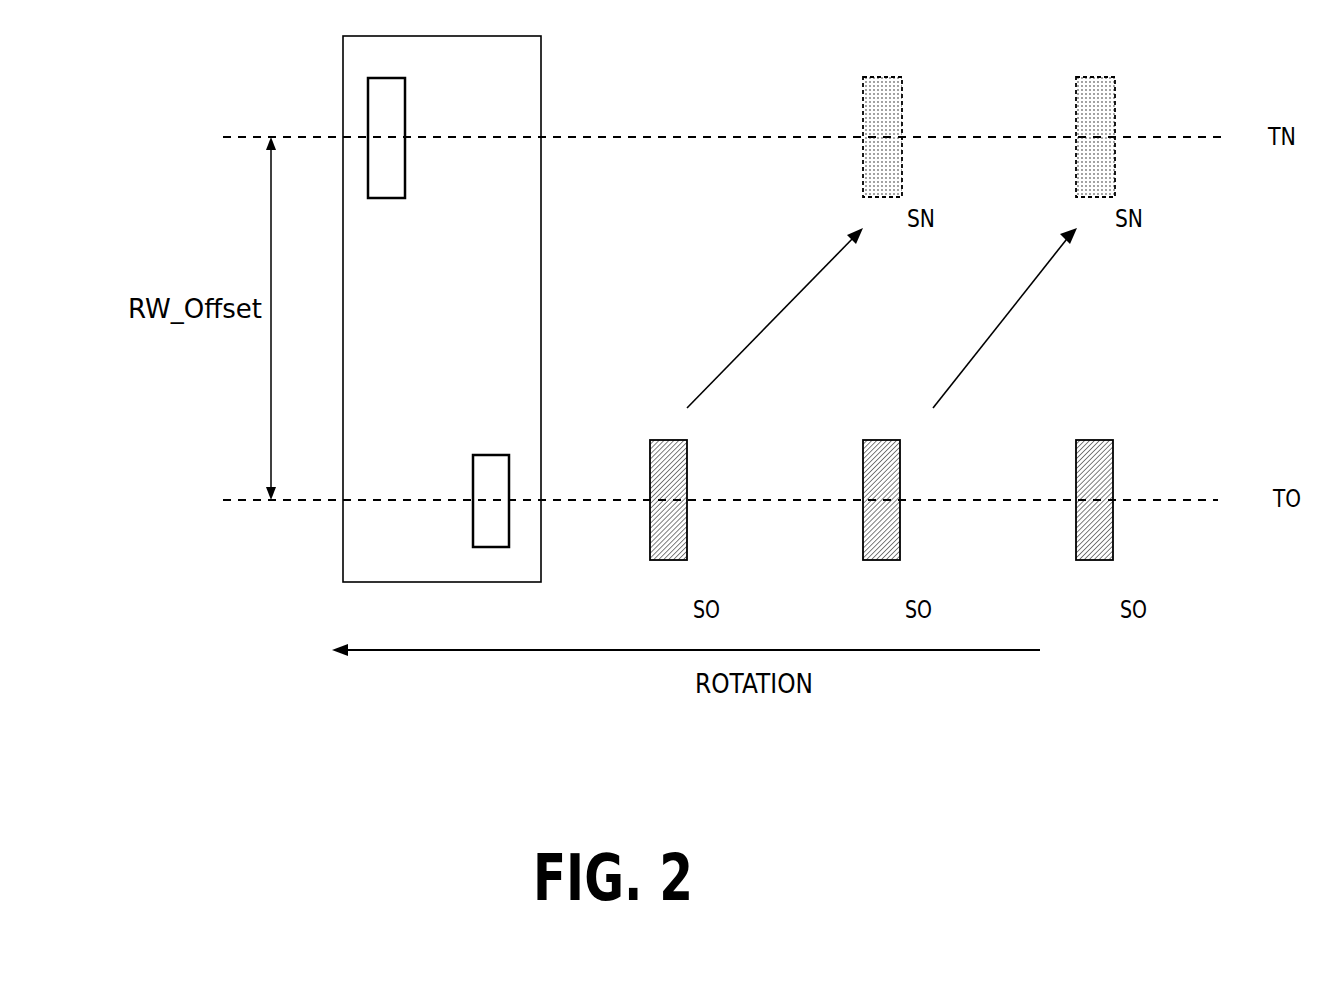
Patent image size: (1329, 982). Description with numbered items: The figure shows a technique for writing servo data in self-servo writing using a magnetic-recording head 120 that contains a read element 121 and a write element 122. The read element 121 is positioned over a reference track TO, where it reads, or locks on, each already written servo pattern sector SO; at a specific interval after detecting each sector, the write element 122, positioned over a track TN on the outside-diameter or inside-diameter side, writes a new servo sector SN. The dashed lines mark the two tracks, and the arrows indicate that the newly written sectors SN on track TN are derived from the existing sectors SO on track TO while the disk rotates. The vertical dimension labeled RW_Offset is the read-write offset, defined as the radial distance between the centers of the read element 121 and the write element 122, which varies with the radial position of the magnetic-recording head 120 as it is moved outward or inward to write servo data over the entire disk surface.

The magnetic-recording head 120 is at (533, 68).
The read element 121 is at (472, 475).
The write element 122 is at (368, 118).